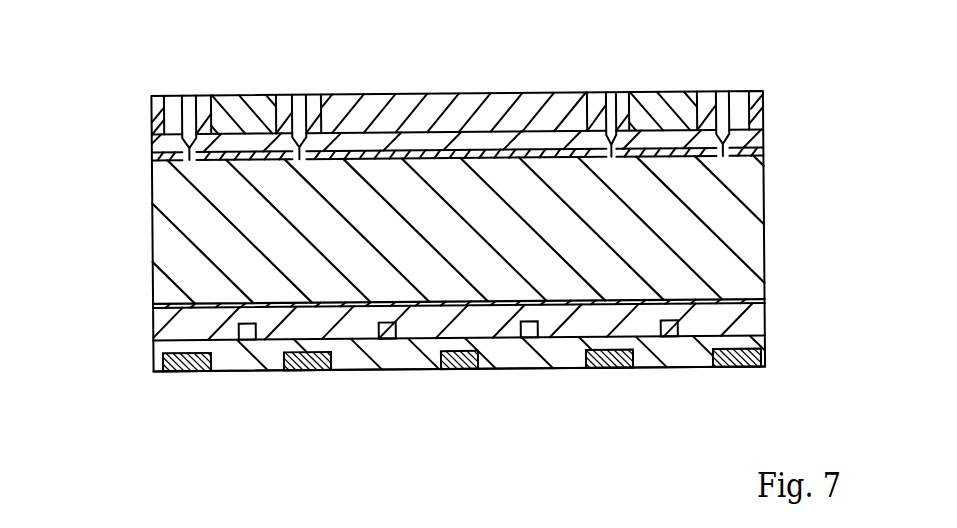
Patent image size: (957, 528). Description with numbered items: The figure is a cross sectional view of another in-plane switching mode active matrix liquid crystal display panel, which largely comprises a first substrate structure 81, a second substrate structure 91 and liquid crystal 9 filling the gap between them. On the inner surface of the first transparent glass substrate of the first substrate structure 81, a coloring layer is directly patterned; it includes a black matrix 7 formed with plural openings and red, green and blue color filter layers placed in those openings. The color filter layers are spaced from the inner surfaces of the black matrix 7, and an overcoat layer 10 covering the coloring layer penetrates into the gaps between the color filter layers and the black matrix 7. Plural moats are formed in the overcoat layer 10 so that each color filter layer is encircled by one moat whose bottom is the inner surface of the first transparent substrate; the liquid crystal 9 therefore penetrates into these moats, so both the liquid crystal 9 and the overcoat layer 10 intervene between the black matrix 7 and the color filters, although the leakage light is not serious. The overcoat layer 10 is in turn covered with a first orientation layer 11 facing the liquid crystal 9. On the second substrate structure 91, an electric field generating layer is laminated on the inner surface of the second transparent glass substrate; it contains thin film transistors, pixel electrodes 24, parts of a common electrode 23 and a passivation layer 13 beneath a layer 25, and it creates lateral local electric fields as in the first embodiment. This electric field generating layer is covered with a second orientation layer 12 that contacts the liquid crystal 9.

The first substrate structure 81 is at (136, 139).
The second substrate structure 91 is at (136, 329).
The black matrix 7 is at (248, 95).
The overcoat layer 10 is at (763, 137).
The first orientation layer 11 is at (762, 157).
The liquid crystal 9 is at (752, 255).
The second orientation layer 12 is at (763, 298).
The passivation layer 13 is at (765, 320).
The lower layer 25 is at (765, 347).
The common electrode 23 is at (186, 372).
The pixel electrode 24 is at (247, 340).